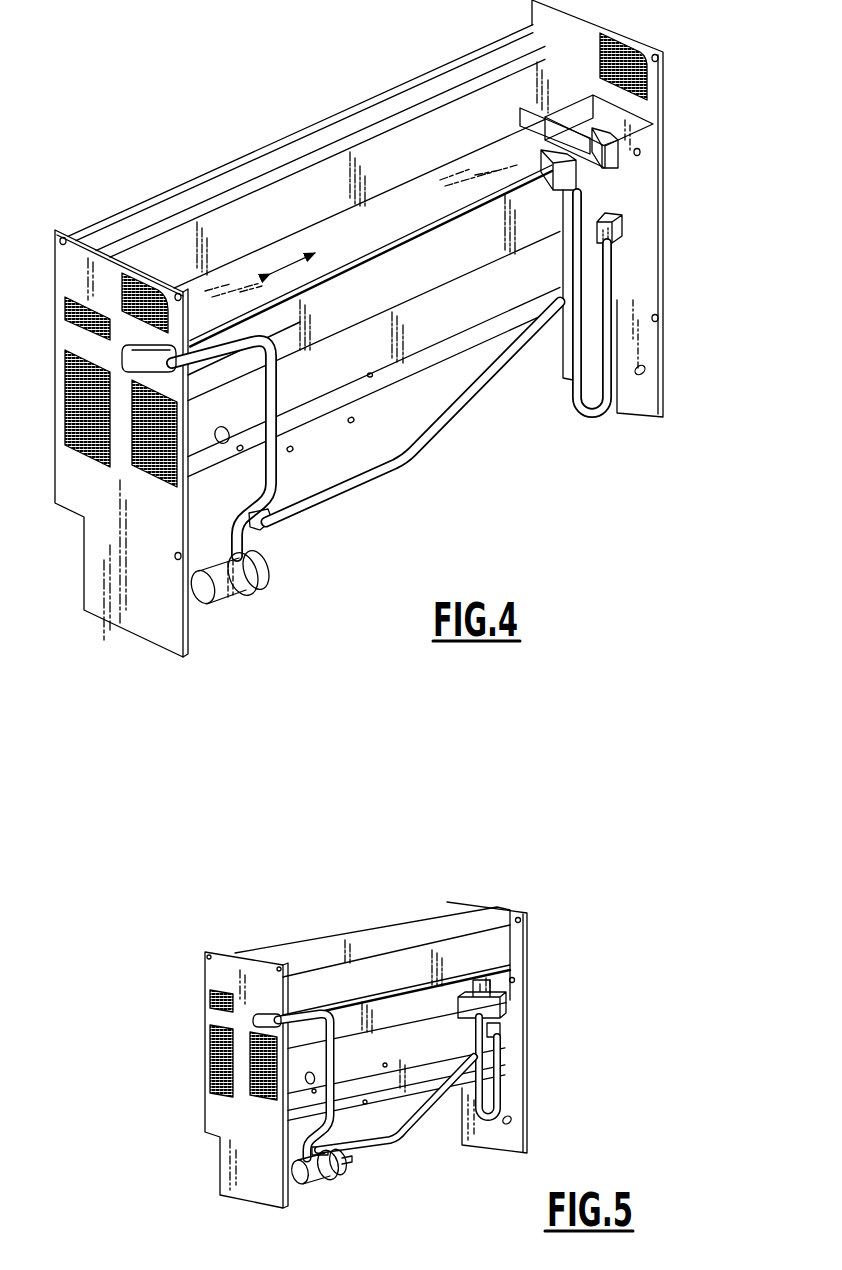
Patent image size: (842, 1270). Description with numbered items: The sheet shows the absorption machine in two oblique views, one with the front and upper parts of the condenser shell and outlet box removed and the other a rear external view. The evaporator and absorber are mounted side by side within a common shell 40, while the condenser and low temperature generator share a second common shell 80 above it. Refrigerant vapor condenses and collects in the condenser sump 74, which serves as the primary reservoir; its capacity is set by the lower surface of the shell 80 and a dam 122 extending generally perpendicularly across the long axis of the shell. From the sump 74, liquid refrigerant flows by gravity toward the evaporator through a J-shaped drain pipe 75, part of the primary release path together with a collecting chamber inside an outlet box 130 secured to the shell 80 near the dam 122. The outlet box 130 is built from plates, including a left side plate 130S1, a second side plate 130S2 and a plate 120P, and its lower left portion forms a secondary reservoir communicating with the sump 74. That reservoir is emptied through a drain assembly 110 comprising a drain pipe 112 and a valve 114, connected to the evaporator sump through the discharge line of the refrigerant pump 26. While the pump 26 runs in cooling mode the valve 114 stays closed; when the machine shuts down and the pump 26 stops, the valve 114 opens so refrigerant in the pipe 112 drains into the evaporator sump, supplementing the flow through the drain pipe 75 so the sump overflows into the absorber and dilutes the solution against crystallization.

In FIG. 4, the refrigerant pump 26 is at (258, 588).
In FIG. 5, the refrigerant pump 26 is at (326, 1186).
In FIG. 4, the common shell 40 is at (313, 400).
In FIG. 5, the common shell 40 is at (420, 1028).
In FIG. 4, the condenser sump 74 is at (270, 262).
In FIG. 4, the J-tube (refrigerant drain pipe) 75 is at (572, 412).
In FIG. 5, the J-tube (refrigerant drain pipe) 75 is at (500, 1078).
In FIG. 5, the common shell (condenser shell) 80 is at (345, 983).
In FIG. 4, the drain assembly (secondary refrigerant release path) 110 is at (304, 525).
In FIG. 4, the drain pipe 112 is at (438, 455).
In FIG. 5, the drain pipe 112 is at (418, 1133).
In FIG. 4, the valve 114 is at (270, 545).
In FIG. 5, the valve 114 is at (307, 1152).
In FIG. 4, the plug connector 120P is at (600, 200).
In FIG. 4, the dam 122 is at (556, 128).
In FIG. 5, the outlet box 130 is at (497, 1003).
In FIG. 4, the left side plate 130S1 is at (560, 193).
In FIG. 4, the second sensor 130S2 is at (622, 165).